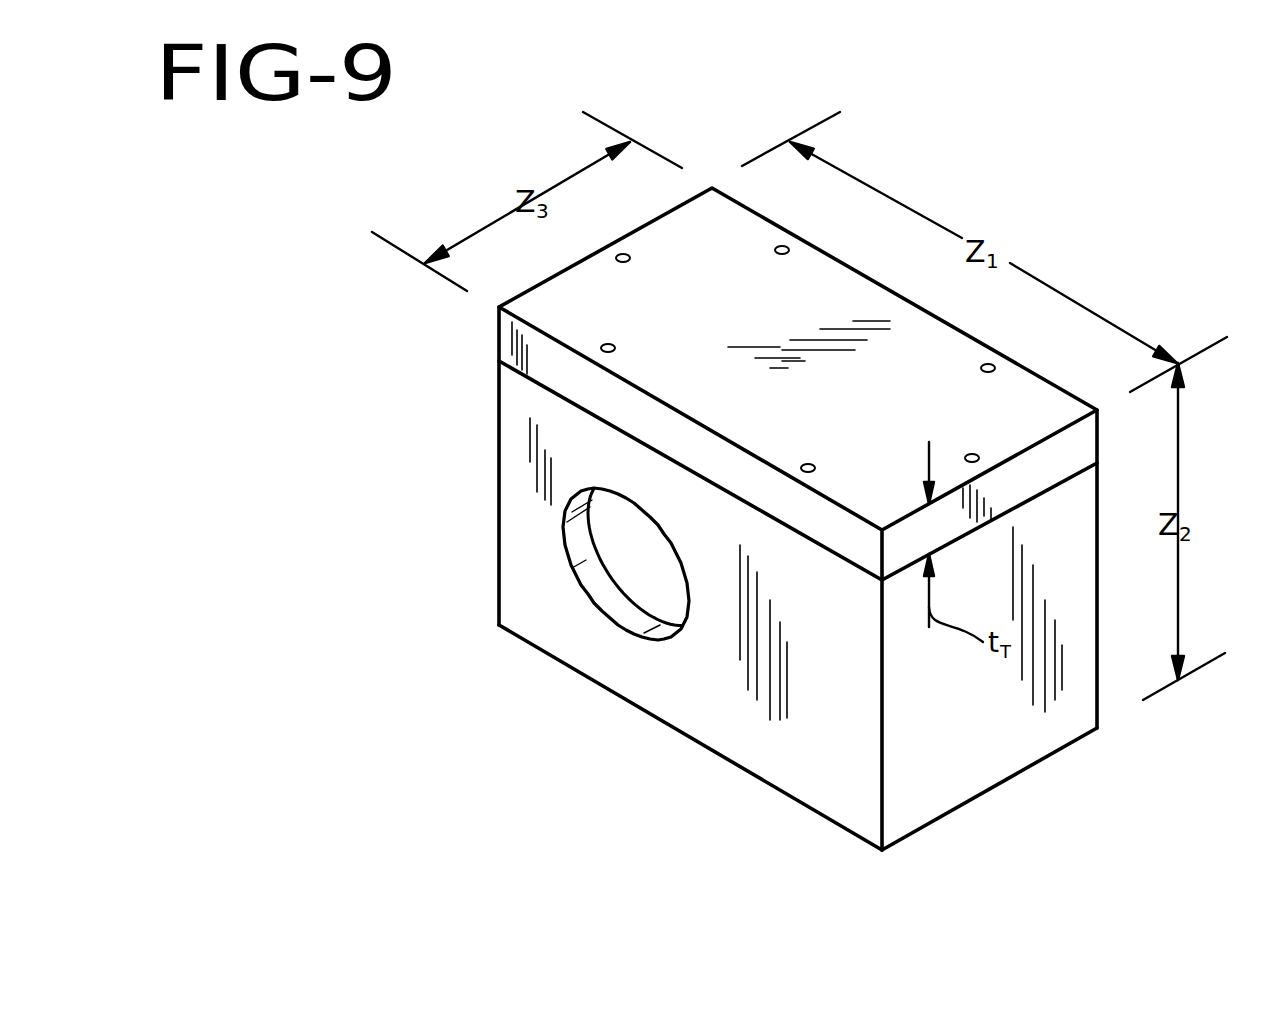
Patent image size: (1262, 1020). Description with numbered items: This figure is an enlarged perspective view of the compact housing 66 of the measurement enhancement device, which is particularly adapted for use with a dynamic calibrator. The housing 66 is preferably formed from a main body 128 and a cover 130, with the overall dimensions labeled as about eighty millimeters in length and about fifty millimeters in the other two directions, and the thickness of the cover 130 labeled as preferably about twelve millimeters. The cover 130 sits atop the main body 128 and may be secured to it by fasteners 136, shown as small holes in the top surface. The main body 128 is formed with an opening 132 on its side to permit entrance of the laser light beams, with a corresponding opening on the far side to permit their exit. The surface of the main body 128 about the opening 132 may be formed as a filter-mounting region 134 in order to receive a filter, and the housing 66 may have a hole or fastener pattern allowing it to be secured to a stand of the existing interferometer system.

The compact housing 66 is at (603, 748).
The main body 128 is at (1008, 782).
The cover 130 is at (497, 332).
The opening 132 is at (635, 553).
The filter-mounting region 134 is at (522, 588).
The fasteners 136 is at (630, 262).